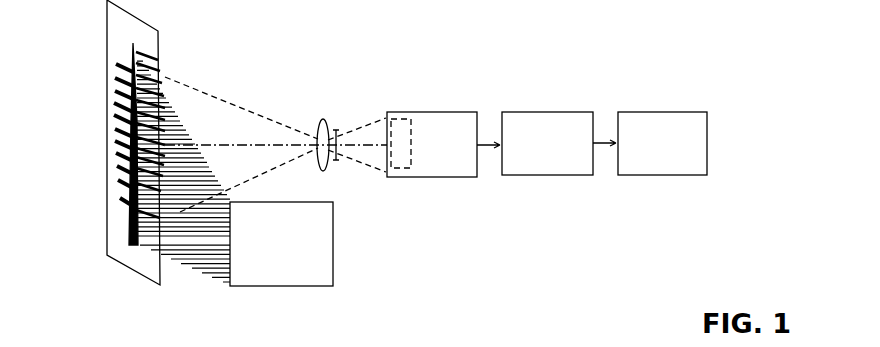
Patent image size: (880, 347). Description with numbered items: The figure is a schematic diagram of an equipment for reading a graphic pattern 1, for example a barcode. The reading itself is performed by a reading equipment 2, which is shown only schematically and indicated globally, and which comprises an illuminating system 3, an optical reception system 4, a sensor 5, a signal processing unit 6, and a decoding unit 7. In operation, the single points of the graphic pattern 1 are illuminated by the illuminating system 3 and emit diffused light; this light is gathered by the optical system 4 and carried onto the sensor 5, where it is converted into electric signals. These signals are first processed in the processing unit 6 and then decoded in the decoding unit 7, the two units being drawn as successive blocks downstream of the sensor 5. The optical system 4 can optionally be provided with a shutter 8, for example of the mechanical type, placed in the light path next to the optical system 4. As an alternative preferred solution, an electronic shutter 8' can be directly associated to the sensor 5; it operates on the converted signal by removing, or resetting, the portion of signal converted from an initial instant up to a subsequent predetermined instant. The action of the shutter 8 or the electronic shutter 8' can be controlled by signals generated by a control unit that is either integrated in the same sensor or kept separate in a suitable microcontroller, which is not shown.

The graphic pattern 1 is at (113, 179).
The reading equipment 2 is at (484, 50).
The illuminating system 3 is at (333, 248).
The optical reception system 4 is at (323, 120).
The sensor 5 is at (422, 112).
The signal processing unit 6 is at (556, 112).
The decoding unit 7 is at (650, 112).
The shutter 8 is at (351, 173).
The electronic shutter 8' is at (412, 103).